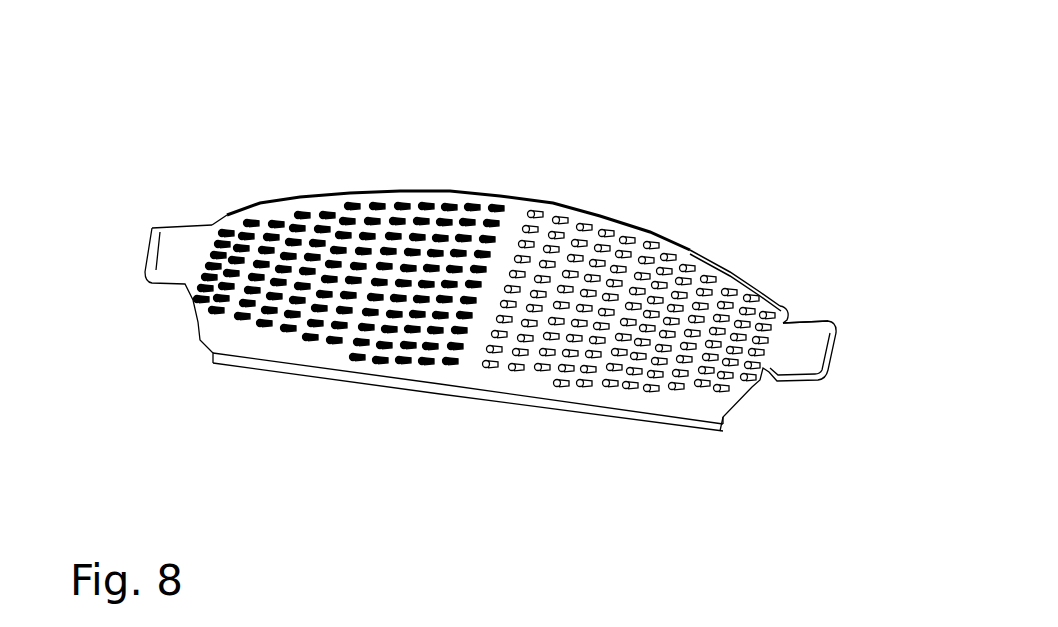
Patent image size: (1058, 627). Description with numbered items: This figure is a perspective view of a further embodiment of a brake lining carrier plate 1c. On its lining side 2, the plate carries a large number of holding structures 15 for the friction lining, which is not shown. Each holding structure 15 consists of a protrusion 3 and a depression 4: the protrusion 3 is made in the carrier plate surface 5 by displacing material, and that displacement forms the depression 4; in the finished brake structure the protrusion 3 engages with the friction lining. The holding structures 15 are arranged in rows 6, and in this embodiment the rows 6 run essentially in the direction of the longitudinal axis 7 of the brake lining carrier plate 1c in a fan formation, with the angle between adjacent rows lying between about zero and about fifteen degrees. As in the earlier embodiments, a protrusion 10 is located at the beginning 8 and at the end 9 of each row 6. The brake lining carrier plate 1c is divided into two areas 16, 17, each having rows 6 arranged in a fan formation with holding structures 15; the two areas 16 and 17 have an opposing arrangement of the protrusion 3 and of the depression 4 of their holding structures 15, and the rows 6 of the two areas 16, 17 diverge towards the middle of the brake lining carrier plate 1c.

The brake lining carrier plate 1c is at (706, 80).
The lining side 2 is at (668, 258).
The protrusion 3 is at (366, 204).
The depression 4 is at (360, 206).
The carrier plate surface 5 is at (692, 254).
The rows 6 is at (245, 222).
The longitudinal axis 7 is at (858, 357).
The beginning 8 is at (203, 298).
The end 9 is at (766, 305).
The protrusion 10 is at (760, 337).
The holding structures 15 is at (373, 362).
The area 16 is at (303, 358).
The area 17 is at (532, 392).